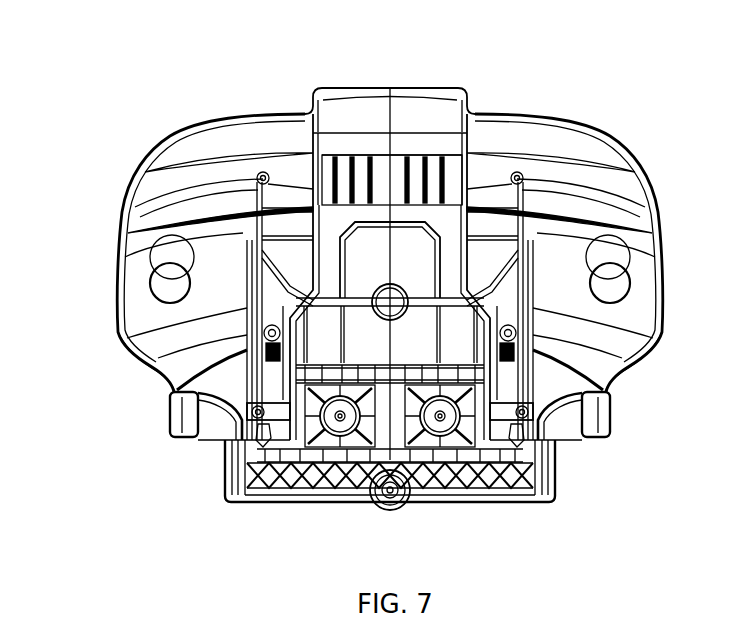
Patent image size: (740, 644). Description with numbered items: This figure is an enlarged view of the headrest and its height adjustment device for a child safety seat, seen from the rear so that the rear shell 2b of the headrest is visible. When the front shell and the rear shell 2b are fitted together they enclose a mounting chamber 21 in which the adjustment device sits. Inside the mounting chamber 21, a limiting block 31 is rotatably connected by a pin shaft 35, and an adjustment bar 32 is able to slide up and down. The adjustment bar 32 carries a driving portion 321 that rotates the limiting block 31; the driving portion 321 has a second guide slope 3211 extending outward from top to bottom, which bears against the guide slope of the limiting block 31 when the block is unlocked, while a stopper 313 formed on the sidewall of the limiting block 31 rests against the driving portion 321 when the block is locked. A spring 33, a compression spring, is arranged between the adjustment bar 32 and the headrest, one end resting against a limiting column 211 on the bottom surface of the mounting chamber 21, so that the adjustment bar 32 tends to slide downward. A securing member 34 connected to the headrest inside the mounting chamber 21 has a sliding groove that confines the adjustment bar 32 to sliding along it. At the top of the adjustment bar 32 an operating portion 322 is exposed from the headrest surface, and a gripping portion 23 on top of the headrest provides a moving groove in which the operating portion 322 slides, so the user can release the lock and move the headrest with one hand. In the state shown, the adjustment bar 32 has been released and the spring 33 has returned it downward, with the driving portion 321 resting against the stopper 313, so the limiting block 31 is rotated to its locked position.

The rear shell 2b is at (134, 208).
The mounting chamber 21 is at (497, 272).
The limiting column 211 is at (610, 357).
The gripping portion 23 is at (376, 92).
The limiting block 31 is at (552, 480).
The stopper 313 is at (531, 495).
The adjustment bar 32 is at (450, 226).
The driving portion 321 is at (527, 445).
The second guide slope 3211 is at (556, 452).
The operating portion 322 is at (332, 144).
The spring 33 is at (602, 387).
The securing member 34 is at (477, 428).
The pin shaft 35 is at (590, 414).